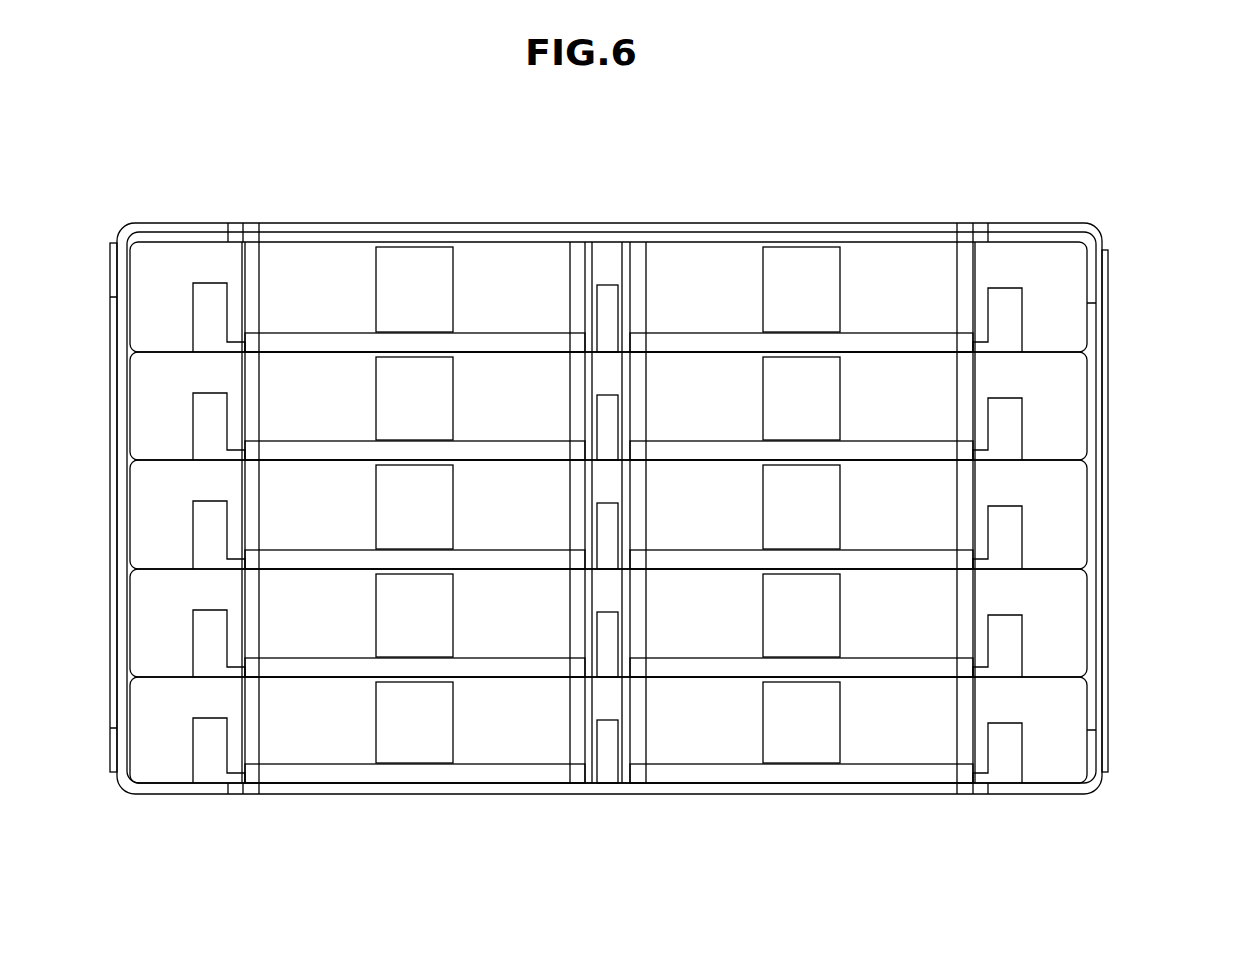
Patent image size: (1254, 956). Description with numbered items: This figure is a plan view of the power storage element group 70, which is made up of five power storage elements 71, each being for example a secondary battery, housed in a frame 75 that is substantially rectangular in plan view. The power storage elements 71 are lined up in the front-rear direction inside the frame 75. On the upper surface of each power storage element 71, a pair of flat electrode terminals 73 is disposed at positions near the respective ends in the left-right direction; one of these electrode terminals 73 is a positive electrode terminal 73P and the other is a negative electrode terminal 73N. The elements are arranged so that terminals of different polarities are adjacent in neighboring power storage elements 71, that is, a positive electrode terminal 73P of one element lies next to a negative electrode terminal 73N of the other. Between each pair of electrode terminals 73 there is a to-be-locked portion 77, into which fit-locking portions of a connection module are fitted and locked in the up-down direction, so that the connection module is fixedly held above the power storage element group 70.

The power storage element group 70 is at (669, 513).
The power storage element 71 is at (1063, 412).
The electrode terminal 73 is at (631, 512).
The negative electrode terminal 73N is at (413, 272).
The positive electrode terminal 73P is at (808, 383).
The frame 75 is at (162, 787).
The to-be-locked portion 77 is at (597, 753).